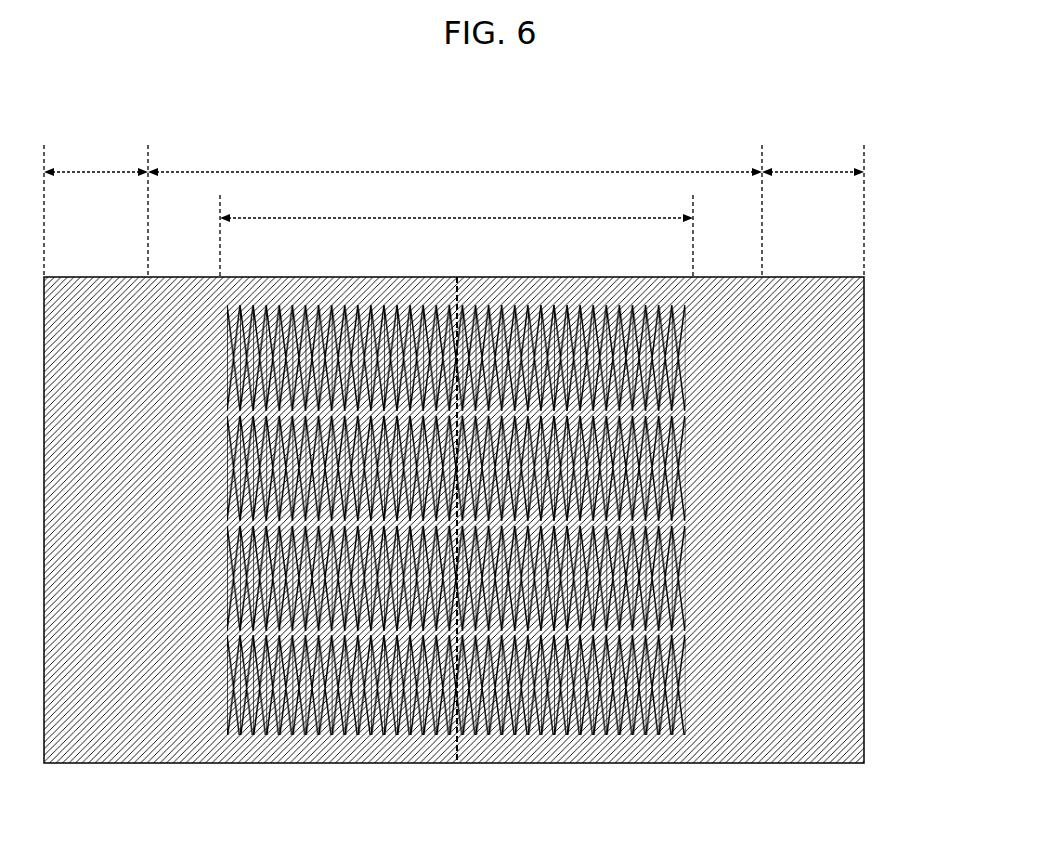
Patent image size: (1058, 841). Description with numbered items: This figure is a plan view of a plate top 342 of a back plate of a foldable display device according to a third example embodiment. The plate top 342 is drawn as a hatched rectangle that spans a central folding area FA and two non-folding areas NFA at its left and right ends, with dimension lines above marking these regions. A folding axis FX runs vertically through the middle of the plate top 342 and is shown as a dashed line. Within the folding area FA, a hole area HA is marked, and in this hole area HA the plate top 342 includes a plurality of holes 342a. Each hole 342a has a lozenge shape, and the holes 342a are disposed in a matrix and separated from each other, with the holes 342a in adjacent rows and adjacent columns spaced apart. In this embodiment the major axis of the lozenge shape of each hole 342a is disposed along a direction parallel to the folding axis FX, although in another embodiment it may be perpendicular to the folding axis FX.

The plate top 342 is at (865, 601).
The holes 342a is at (216, 334).
The folding axis FX is at (460, 750).
The non-folding area NFA is at (454, 210).
The folding area FA is at (455, 159).
The hole area HA is at (456, 235).